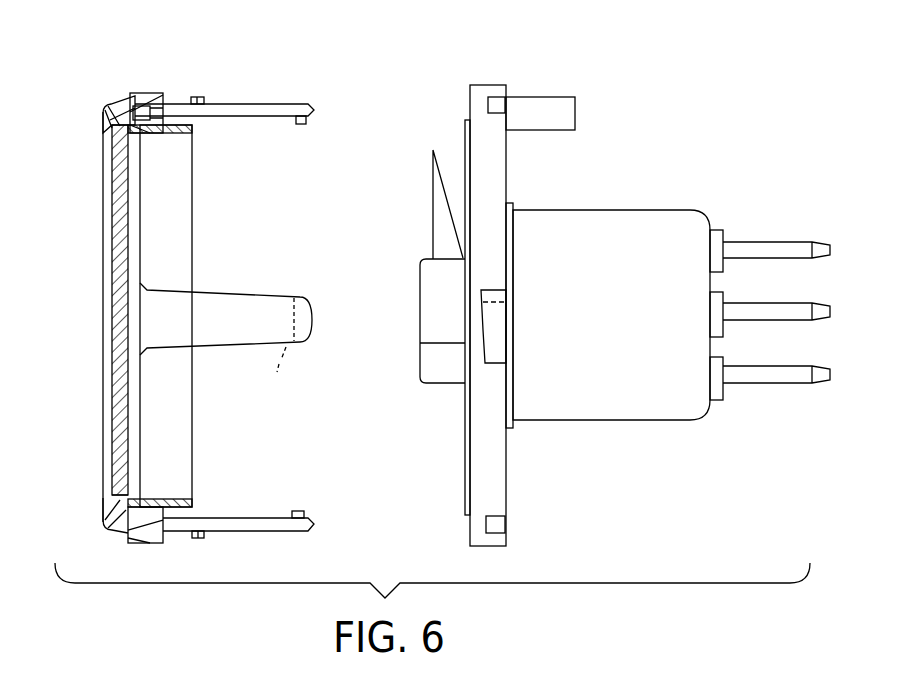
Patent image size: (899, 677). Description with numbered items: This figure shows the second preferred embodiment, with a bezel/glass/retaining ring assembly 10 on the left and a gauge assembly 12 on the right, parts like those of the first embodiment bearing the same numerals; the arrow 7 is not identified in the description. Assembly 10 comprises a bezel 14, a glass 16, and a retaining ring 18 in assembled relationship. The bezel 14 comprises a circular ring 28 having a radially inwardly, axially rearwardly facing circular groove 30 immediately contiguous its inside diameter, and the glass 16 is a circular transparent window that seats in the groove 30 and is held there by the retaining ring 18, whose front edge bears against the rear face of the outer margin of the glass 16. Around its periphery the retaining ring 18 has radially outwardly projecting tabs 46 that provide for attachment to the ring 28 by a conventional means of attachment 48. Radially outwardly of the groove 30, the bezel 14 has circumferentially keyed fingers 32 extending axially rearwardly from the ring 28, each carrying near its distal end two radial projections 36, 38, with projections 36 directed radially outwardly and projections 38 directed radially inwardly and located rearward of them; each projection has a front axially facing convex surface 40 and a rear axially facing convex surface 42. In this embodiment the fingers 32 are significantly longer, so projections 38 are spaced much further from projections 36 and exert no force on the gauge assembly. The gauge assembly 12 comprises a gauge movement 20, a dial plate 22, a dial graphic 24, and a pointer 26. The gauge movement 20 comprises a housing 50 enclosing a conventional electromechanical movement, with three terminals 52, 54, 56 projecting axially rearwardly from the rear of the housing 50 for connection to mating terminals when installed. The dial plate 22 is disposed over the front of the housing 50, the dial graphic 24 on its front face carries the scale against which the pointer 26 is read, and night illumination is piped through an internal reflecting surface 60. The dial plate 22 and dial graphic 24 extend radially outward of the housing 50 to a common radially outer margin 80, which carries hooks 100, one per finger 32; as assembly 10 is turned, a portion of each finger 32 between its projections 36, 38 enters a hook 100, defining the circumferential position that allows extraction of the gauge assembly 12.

The direction of insertion arrow 7 is at (450, 320).
The bezel/glass/retaining ring assembly 10 is at (98, 372).
The gauge assembly 12 is at (700, 206).
The bezel 14 is at (105, 108).
The glass 16 is at (120, 330).
The retaining ring 18 is at (193, 215).
The gauge movement 20 is at (587, 208).
The dial plate 22 is at (506, 470).
The dial graphic 24 is at (466, 472).
The pointer 26 is at (433, 150).
The circular ring 28 is at (116, 528).
The circular groove 30 is at (122, 492).
The fingers 32 is at (237, 104).
The radial projections 36 is at (195, 97).
The radial projections 38 is at (301, 124).
The front axially facing convex surface 40 is at (293, 125).
The rear axially facing convex surface 42 is at (306, 118).
The tabs 46 is at (140, 96).
The means of attachment 48 is at (192, 123).
The housing 50 is at (623, 228).
The terminal 52 is at (793, 243).
The terminal 54 is at (793, 305).
The terminal 56 is at (791, 367).
The internal reflecting surface 60 is at (538, 97).
The radially outer margin 80 is at (515, 428).
The hooks 100 is at (494, 104).